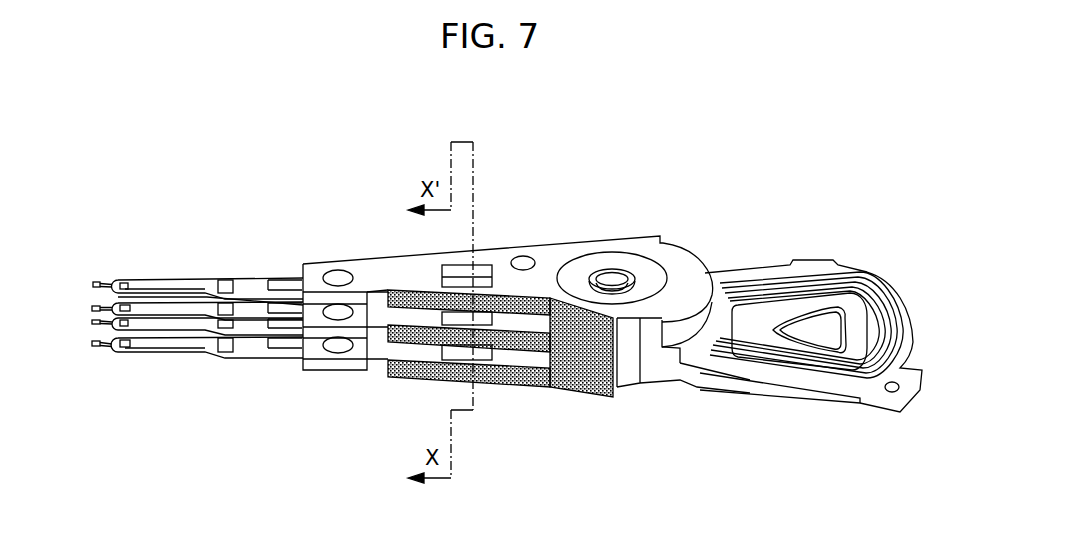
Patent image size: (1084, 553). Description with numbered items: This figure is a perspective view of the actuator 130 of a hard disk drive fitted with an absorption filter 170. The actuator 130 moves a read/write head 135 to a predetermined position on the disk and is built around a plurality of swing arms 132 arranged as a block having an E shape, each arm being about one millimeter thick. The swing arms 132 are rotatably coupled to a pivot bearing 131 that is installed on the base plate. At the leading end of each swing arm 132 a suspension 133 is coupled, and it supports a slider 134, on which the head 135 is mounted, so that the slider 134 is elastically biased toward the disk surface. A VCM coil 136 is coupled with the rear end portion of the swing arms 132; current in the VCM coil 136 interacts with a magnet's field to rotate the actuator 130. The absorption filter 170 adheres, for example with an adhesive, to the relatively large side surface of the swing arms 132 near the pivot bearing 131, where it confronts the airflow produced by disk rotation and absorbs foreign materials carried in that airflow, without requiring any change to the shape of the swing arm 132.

The actuator 130 is at (325, 214).
The pivot bearing 131 is at (612, 270).
The swing arm 132 is at (392, 262).
The suspension 133 is at (211, 280).
The slider 134 is at (126, 306).
The read/write head 135 is at (96, 282).
The VCM coil 136 is at (882, 262).
The absorption filter 170 is at (557, 390).